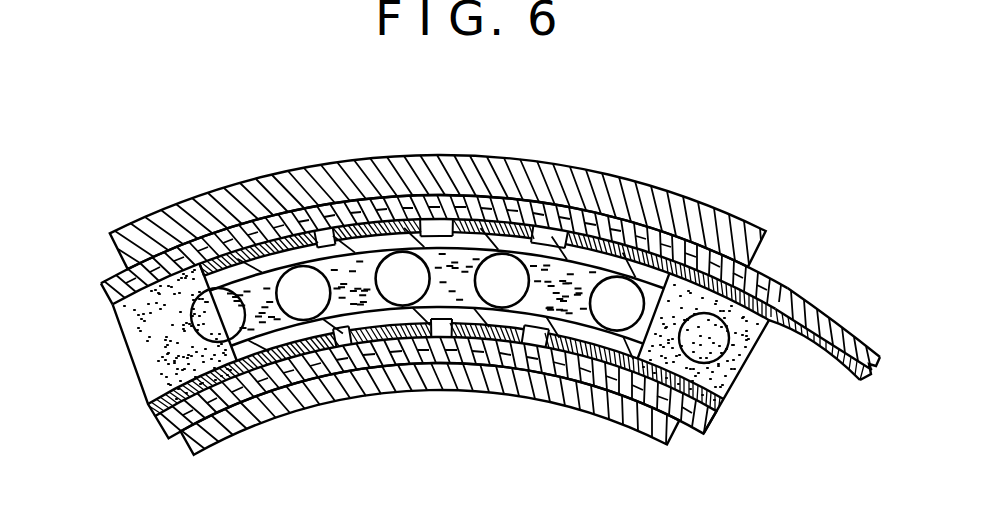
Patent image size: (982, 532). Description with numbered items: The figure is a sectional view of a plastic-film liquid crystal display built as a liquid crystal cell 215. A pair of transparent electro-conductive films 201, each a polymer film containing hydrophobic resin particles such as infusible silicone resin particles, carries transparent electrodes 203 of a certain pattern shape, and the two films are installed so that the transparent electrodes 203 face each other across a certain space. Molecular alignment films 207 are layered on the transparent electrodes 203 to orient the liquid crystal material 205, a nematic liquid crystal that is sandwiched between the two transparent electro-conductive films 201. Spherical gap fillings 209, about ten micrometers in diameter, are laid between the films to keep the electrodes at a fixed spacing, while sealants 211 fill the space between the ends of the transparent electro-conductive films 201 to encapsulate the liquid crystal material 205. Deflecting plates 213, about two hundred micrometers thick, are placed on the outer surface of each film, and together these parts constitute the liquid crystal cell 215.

The transparent electro-conductive film 201 is at (582, 202).
The transparent electrode 203 is at (527, 216).
The liquid crystal material 205 is at (331, 300).
The molecular alignment film 207 is at (443, 238).
The spherical gap filling 209 is at (407, 292).
The sealant 211 is at (152, 349).
The deflecting plate 213 is at (300, 185).
The liquid crystal cell 215 is at (153, 174).